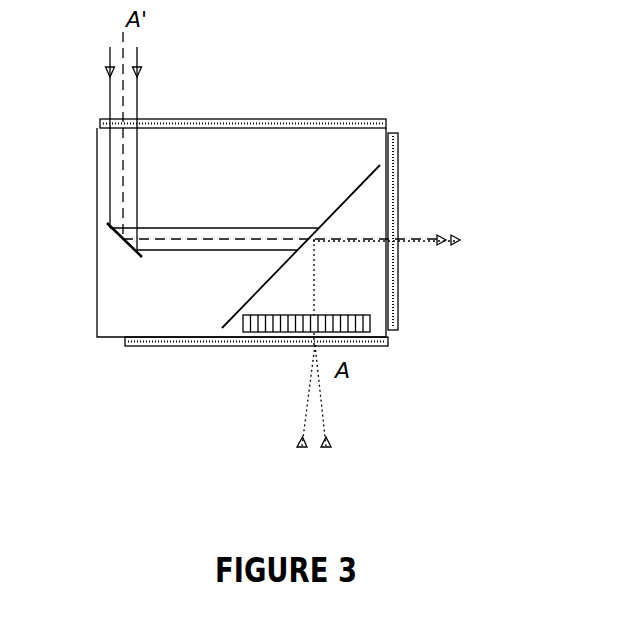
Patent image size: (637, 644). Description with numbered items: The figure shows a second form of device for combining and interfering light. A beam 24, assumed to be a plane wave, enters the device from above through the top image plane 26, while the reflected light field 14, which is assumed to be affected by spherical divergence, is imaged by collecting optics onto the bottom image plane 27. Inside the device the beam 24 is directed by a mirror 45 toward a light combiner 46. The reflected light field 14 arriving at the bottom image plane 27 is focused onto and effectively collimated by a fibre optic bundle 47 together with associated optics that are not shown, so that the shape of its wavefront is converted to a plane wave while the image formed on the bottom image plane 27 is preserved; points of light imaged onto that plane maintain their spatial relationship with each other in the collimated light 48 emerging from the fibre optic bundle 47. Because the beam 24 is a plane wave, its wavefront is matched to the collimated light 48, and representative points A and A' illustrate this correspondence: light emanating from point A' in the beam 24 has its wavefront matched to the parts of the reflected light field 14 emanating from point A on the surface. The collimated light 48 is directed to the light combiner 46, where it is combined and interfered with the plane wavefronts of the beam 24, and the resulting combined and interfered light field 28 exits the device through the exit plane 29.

The reflected light field 14 is at (307, 412).
The beam 24 is at (138, 60).
The top image plane 26 is at (223, 118).
The bottom image plane 27 is at (227, 345).
The combined and interfered light field 28 is at (425, 232).
The exit plane 29 is at (398, 160).
The mirror 45 is at (123, 240).
The light combiner 46 is at (345, 198).
The fibre optic bundle 47 is at (370, 323).
The collimated light 48 is at (318, 290).